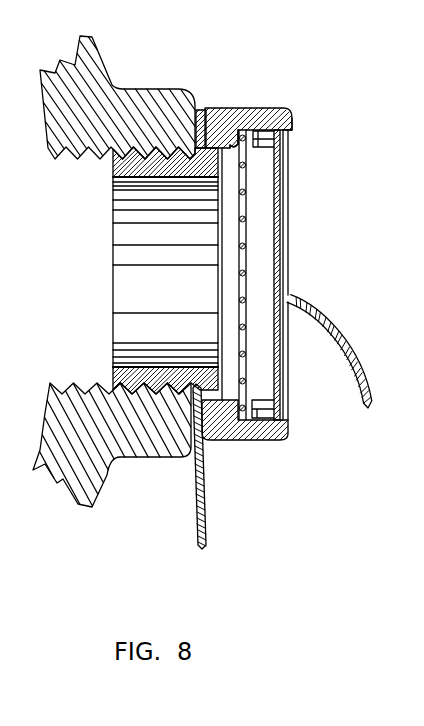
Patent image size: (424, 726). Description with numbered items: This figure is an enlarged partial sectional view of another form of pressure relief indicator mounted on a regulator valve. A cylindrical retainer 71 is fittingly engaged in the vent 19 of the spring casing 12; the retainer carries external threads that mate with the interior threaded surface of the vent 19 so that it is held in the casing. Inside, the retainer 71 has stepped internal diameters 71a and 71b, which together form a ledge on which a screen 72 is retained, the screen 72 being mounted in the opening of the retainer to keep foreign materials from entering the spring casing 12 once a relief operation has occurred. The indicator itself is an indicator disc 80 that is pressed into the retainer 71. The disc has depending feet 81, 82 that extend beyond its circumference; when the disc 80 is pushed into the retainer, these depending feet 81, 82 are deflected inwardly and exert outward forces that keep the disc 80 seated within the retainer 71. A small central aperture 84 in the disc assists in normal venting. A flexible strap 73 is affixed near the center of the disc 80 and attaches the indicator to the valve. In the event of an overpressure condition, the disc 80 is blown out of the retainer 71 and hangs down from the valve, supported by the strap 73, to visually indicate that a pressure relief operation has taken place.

The spring casing 12 is at (128, 458).
The vent 19 is at (78, 163).
The cylindrical retainer 71 is at (258, 108).
The stepped internal diameter 71a is at (290, 132).
The stepped internal diameter 71b is at (231, 146).
The screen 72 is at (247, 238).
The flexible strap 73 is at (352, 352).
The indicator disc 80 is at (282, 212).
The depending foot 81 is at (265, 148).
The depending foot 82 is at (257, 403).
The central aperture 84 is at (284, 281).